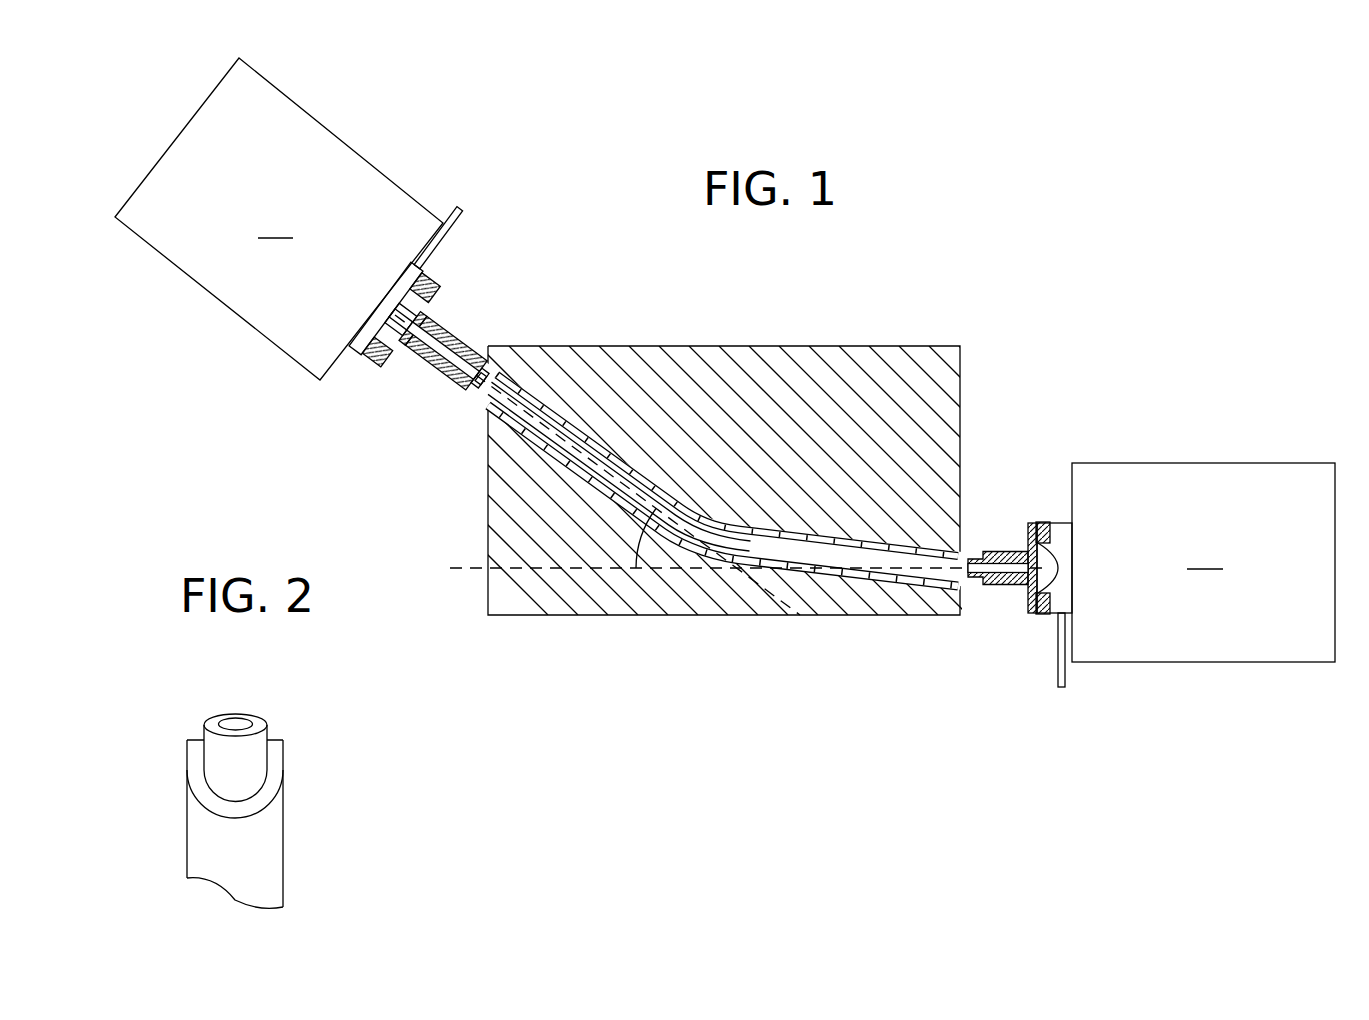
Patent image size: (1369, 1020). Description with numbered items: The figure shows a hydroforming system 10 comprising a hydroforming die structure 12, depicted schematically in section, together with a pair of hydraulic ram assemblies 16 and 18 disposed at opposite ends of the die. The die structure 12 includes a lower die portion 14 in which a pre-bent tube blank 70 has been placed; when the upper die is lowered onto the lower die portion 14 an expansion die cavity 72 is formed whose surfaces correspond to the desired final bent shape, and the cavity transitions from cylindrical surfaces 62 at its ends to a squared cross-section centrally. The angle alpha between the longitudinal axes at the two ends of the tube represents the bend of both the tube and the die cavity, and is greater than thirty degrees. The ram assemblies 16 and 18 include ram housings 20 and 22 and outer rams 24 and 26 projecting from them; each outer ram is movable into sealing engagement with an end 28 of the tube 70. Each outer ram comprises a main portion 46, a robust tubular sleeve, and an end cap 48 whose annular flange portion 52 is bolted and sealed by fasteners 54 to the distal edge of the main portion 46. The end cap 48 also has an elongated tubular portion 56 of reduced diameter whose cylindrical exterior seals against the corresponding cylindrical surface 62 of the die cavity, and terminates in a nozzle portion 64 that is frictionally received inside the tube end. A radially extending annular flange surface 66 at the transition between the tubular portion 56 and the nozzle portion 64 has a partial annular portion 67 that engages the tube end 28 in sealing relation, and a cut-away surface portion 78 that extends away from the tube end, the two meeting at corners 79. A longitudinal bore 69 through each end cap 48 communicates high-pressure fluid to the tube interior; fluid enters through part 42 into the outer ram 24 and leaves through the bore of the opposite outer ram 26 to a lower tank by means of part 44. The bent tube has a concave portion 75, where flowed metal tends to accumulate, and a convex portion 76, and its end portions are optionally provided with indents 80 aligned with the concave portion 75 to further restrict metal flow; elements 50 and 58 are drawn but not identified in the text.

In FIG. 1, the hydroforming system 10 is at (903, 277).
In FIG. 1, the hydroforming die structure 12 is at (709, 340).
In FIG. 1, the lower die portion 14 is at (593, 622).
In FIG. 1, the hydraulic ram assembly 16 is at (196, 302).
In FIG. 1, the hydraulic ram assembly 18 is at (1183, 464).
In FIG. 1, the ram housing 20 is at (279, 219).
In FIG. 1, the ram housing 22 is at (1203, 562).
In FIG. 1, the outer ram 24 is at (358, 357).
In FIG. 1, the outer ram 26 is at (1043, 510).
In FIG. 1, the tube end 28 is at (490, 398).
In FIG. 1, the part 42 is at (458, 210).
In FIG. 1, the part 44 is at (1062, 678).
In FIG. 1, the main portion 46 is at (440, 268).
In FIG. 1, the end cap 48 is at (442, 275).
In FIG. 1, the mounting plate 50 is at (366, 364).
In FIG. 1, the annular flange portion 52 is at (398, 370).
In FIG. 1, the fasteners 54 is at (448, 300).
In FIG. 1, the tubular portion 56 is at (436, 362).
In FIG. 2, the tubular portion 56 is at (267, 840).
In FIG. 1, the connector body portion 58 is at (450, 382).
In FIG. 1, the cylindrical surface 62 is at (522, 376).
In FIG. 1, the nozzle portion 64 is at (480, 350).
In FIG. 2, the nozzle portion 64 is at (237, 766).
In FIG. 1, the annular flange surface 66 is at (468, 374).
In FIG. 2, the annular flange surface 66 is at (198, 778).
In FIG. 2, the partial annular portion 67 is at (198, 740).
In FIG. 1, the longitudinal bore 69 is at (402, 306).
In FIG. 2, the longitudinal bore 69 is at (236, 723).
In FIG. 1, the tube blank 70 is at (655, 476).
In FIG. 1, the expansion die cavity 72 is at (790, 526).
In FIG. 1, the concave portion 75 is at (927, 549).
In FIG. 1, the convex portion 76 is at (712, 561).
In FIG. 1, the cut-away surface portion 78 is at (472, 340).
In FIG. 2, the cut-away surface portion 78 is at (273, 768).
In FIG. 2, the corners 79 is at (200, 742).
In FIG. 1, the indent 80 is at (560, 392).